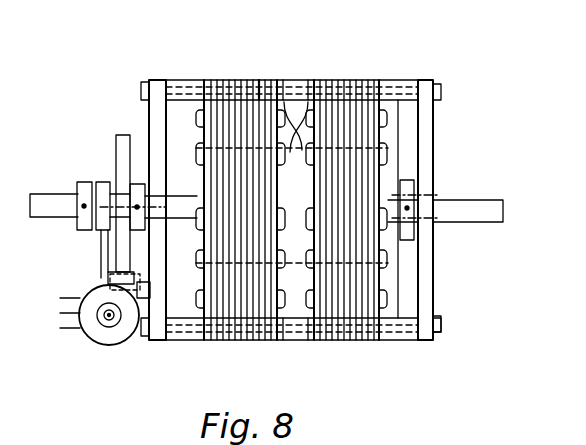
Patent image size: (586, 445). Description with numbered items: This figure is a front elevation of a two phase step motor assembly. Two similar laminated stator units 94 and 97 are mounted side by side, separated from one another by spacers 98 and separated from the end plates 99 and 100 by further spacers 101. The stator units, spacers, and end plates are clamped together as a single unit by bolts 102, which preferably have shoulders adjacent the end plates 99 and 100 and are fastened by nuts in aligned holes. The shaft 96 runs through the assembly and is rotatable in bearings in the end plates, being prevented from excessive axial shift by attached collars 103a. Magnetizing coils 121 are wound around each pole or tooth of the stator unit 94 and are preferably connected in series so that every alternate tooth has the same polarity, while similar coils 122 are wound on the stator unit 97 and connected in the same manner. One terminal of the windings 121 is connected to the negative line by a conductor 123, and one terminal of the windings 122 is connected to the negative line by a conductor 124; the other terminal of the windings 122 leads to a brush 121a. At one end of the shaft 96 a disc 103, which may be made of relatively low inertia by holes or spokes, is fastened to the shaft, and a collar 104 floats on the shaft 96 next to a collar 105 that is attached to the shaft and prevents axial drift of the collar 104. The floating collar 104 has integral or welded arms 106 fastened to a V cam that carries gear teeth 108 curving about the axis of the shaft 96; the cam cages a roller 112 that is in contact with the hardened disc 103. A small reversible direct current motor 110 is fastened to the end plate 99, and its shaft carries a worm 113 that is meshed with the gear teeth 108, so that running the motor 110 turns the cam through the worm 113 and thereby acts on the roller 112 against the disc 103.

The stator unit 94 is at (239, 80).
The shaft 96 is at (470, 200).
The stator unit 97 is at (343, 80).
The spacers 98 is at (297, 80).
The end plate 99 is at (148, 114).
The end plate 100 is at (434, 138).
The spacers 101 is at (186, 80).
The bolts 102 is at (432, 318).
The disc 103 is at (118, 140).
The collars 103a is at (182, 184).
The collar 104 is at (100, 182).
The collar 105 is at (78, 192).
The arms 106 is at (101, 256).
The gear teeth 108 is at (110, 283).
The direct current motor 110 is at (121, 343).
The roller 112 is at (128, 272).
The worm 113 is at (106, 327).
The magnetizing coils 121 is at (199, 120).
The brush 121a is at (142, 292).
The coils 122 is at (296, 148).
The conductor 123 is at (261, 82).
The conductor 124 is at (398, 95).